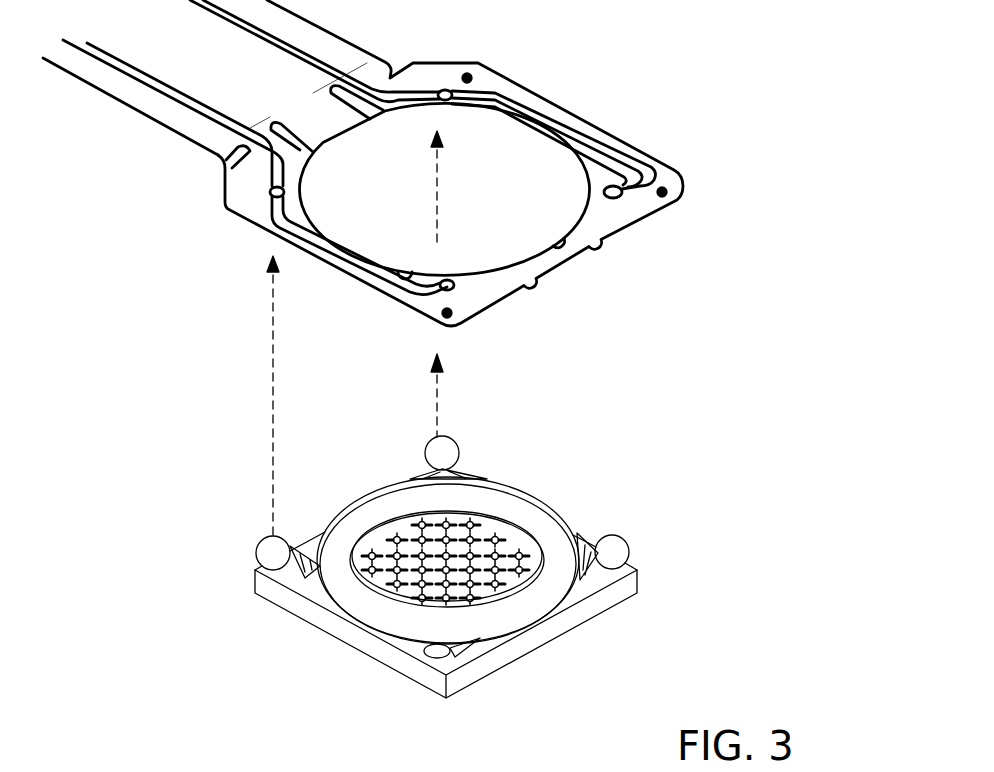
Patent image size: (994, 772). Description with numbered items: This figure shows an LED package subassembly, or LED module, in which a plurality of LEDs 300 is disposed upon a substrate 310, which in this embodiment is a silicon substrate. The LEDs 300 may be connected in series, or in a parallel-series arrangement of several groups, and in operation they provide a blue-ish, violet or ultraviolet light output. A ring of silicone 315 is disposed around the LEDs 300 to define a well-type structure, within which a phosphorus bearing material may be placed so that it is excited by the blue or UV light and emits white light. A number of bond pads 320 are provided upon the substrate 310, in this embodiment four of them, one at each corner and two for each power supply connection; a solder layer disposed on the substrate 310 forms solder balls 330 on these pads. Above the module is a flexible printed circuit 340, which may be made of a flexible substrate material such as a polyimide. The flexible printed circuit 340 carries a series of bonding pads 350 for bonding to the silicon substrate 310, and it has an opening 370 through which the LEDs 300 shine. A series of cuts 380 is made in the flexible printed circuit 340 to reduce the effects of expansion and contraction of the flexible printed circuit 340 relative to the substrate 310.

The LEDs 300 is at (501, 523).
The substrate 310 is at (607, 612).
The ring of silicone 315 is at (565, 560).
The bond pads 320 is at (443, 650).
The solder balls 330 is at (273, 536).
The flexible printed circuit 340 is at (631, 166).
The bonding pads 350 is at (275, 198).
The opening 370 is at (460, 144).
The cuts 380 is at (600, 152).